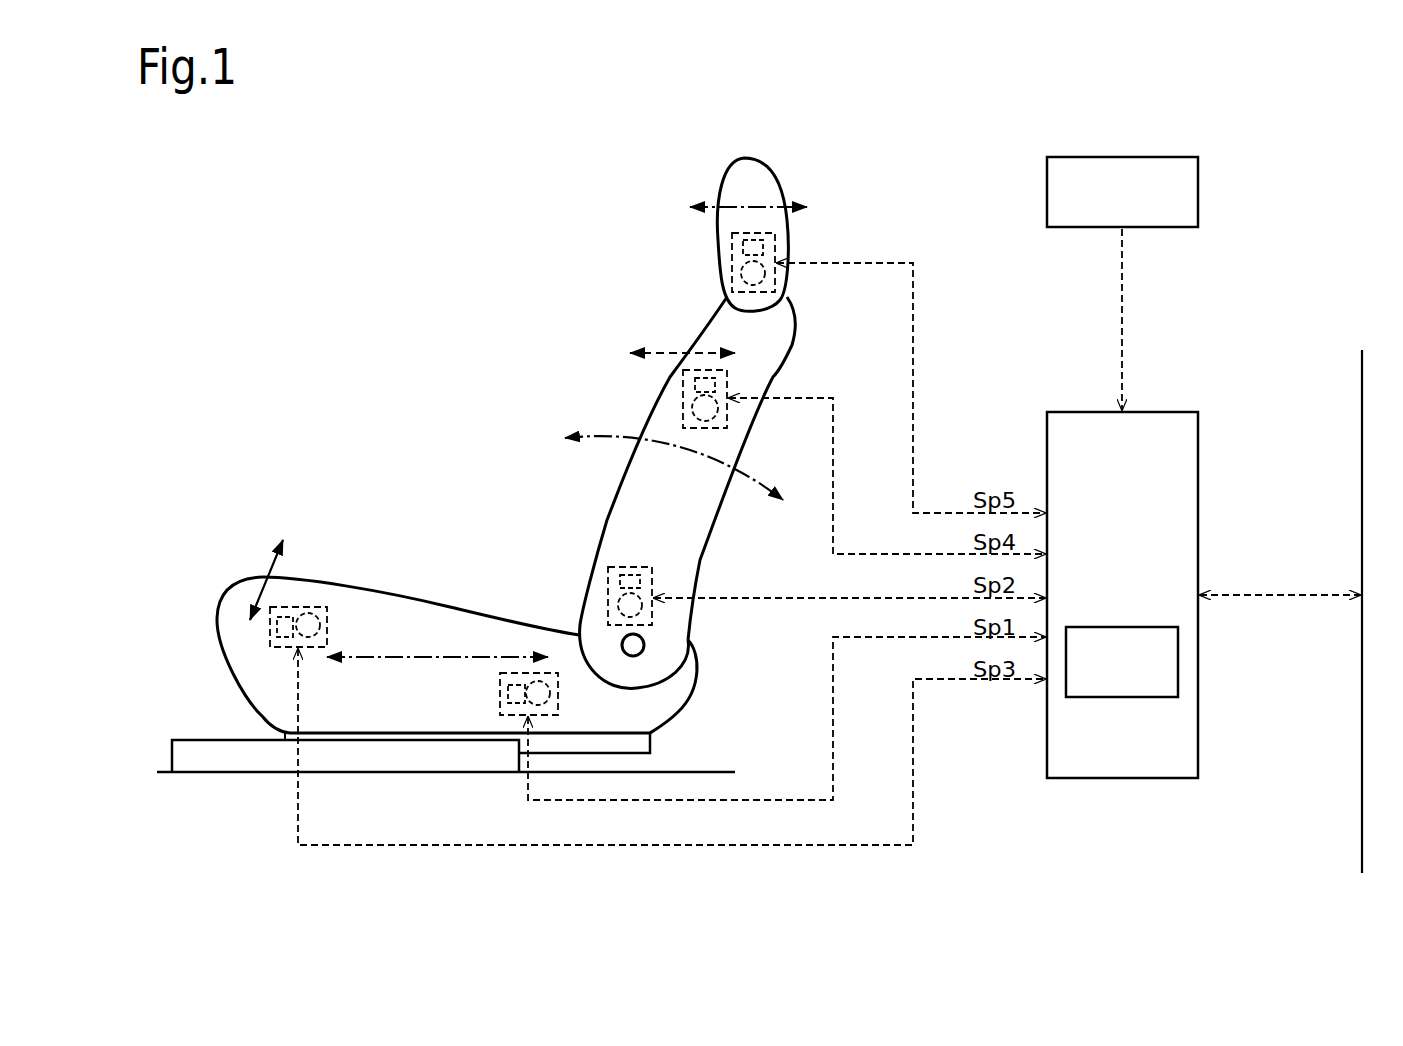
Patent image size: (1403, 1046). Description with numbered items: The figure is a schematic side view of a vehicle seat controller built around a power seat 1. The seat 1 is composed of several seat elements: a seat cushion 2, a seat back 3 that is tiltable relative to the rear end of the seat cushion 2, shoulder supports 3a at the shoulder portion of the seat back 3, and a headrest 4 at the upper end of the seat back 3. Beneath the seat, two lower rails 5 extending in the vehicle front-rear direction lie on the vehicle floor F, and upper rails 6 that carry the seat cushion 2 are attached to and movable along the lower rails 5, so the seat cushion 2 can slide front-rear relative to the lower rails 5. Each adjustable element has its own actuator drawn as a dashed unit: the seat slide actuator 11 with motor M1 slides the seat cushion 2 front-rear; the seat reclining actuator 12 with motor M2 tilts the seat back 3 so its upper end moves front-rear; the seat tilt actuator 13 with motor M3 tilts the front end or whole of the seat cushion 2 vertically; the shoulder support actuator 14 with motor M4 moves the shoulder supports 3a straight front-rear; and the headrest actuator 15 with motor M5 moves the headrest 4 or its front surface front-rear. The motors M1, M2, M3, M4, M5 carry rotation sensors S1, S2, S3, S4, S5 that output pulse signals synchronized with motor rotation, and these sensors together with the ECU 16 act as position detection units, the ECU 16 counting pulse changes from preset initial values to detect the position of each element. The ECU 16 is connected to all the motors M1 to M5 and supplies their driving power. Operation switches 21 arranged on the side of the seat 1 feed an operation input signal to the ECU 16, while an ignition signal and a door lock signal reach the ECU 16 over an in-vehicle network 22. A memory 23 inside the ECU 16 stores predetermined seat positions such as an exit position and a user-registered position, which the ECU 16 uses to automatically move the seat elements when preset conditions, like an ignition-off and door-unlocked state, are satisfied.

The seat 1 is at (372, 256).
The seat cushion 2 is at (388, 592).
The seat back 3 is at (796, 322).
The shoulder supports 3a is at (710, 330).
The headrest 4 is at (744, 158).
The lower rails 5 is at (194, 747).
The upper rails 6 is at (652, 744).
The seat slide actuator 11 is at (742, 700).
The seat reclining actuator 12 is at (793, 571).
The seat tilt actuator 13 is at (615, 690).
The shoulder support actuator 14 is at (822, 462).
The headrest actuator 15 is at (854, 366).
The ECU 16 is at (1136, 584).
The operation switches 21 is at (1170, 157).
The in-vehicle network 22 is at (1362, 373).
The memory 23 is at (1120, 627).
The rotation sensor S1 is at (508, 693).
The rotation sensor S2 is at (620, 575).
The rotation sensor S3 is at (277, 627).
The rotation sensor S4 is at (695, 385).
The rotation sensor S5 is at (743, 247).
The motor M1 is at (550, 693).
The motor M2 is at (618, 605).
The motor M3 is at (322, 625).
The motor M4 is at (692, 408).
The motor M5 is at (741, 273).
The floor F is at (718, 771).